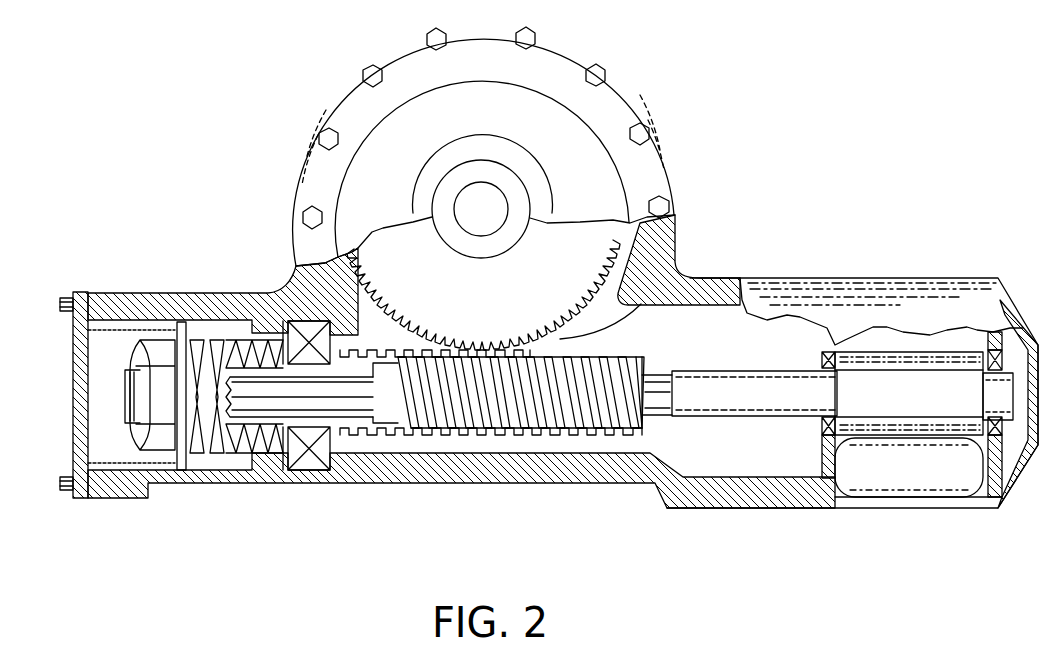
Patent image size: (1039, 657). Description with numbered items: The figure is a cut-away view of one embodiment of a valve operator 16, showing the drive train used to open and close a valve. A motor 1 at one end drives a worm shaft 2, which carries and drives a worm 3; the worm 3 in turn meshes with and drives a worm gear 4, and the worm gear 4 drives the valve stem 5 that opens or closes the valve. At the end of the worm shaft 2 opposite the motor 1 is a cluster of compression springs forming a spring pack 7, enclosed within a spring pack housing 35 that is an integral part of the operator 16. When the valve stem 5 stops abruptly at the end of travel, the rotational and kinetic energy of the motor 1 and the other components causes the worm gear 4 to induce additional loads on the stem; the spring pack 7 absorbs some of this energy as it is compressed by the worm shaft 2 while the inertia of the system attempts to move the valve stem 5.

The motor 1 is at (890, 510).
The worm shaft 2 is at (705, 418).
The worm 3 is at (622, 440).
The worm gear 4 is at (643, 293).
The valve stem 5 is at (493, 215).
The spring pack 7 is at (197, 457).
The operator 16 is at (560, 133).
The spring pack housing 35 is at (105, 290).